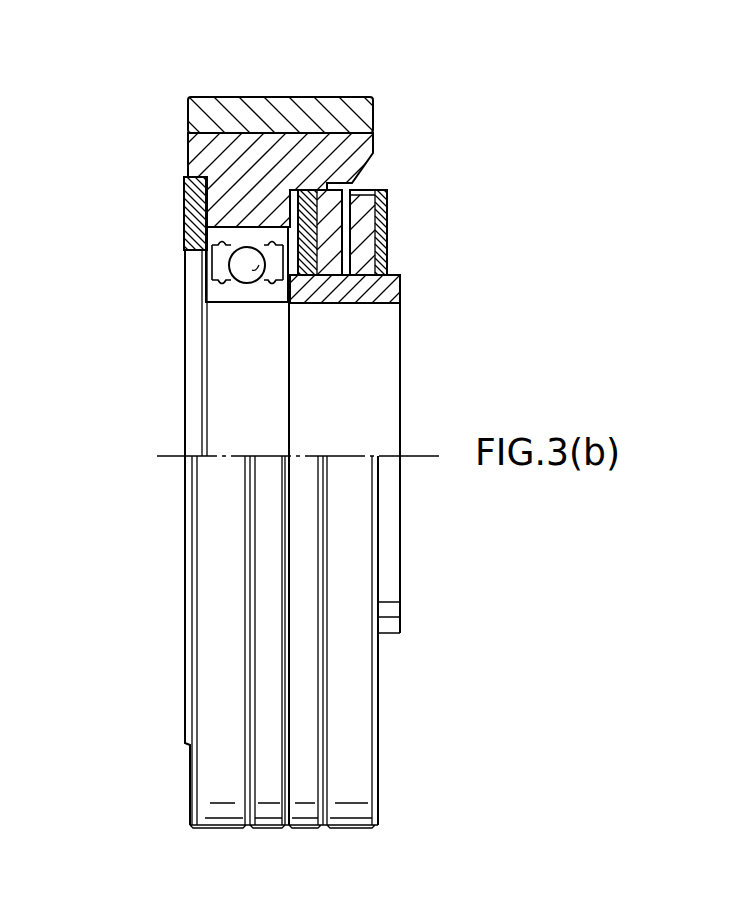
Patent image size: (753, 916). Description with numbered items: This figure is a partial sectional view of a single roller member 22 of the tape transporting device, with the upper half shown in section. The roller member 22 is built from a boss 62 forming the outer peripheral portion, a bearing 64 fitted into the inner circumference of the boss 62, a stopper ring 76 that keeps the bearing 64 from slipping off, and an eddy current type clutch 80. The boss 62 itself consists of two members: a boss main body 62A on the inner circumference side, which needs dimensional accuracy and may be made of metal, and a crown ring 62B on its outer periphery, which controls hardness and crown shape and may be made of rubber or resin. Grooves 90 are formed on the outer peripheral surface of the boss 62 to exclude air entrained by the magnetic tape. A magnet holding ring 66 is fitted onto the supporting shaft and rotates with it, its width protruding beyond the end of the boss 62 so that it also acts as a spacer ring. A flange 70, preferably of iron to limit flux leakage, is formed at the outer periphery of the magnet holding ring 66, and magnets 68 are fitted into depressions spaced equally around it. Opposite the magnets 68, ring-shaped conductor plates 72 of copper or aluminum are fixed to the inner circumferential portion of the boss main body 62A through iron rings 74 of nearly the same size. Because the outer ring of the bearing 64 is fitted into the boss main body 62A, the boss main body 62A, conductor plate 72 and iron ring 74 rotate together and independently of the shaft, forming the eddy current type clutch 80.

The roller member 22 is at (539, 53).
The boss 62 is at (487, 88).
The boss main body 62A is at (374, 155).
The crown ring 62B is at (374, 107).
The grooves 90 is at (318, 97).
The conductor plate 72 is at (327, 190).
The iron ring 74 is at (333, 212).
The stopper ring 76 is at (183, 197).
The bearing 64 is at (207, 290).
The eddy current type clutch 80 is at (430, 222).
The flange 70 is at (363, 252).
The magnet 68 is at (362, 262).
The magnet holding ring 66 is at (373, 288).